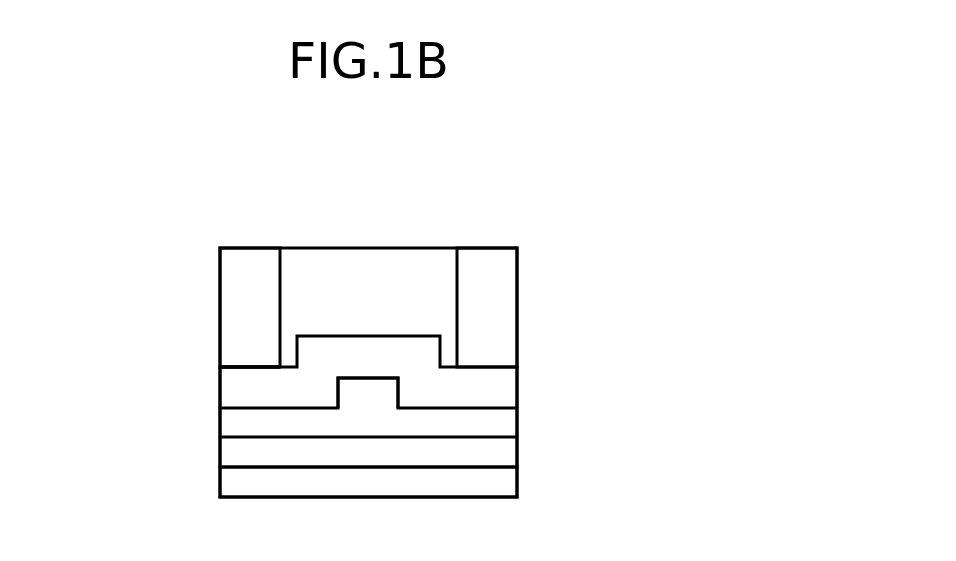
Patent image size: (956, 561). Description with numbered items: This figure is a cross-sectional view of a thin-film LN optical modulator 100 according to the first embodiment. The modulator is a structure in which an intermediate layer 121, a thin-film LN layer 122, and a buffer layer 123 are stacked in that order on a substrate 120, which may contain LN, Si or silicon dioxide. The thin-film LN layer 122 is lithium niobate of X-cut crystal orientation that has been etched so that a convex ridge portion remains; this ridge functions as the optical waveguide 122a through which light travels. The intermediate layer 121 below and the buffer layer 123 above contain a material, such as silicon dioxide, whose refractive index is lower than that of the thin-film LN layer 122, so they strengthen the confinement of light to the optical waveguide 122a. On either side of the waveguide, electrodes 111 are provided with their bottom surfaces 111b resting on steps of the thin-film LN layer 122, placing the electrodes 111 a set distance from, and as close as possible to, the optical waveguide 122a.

The thin-film LN optical modulator 100 is at (578, 178).
The electrodes 111 is at (221, 291).
The bottom surfaces of the electrodes 111b is at (250, 367).
The substrate 120 is at (503, 486).
The intermediate layer 121 is at (503, 456).
The thin-film LN layer 122 is at (503, 422).
The optical waveguide 122a is at (374, 390).
The buffer layer 123 is at (503, 389).